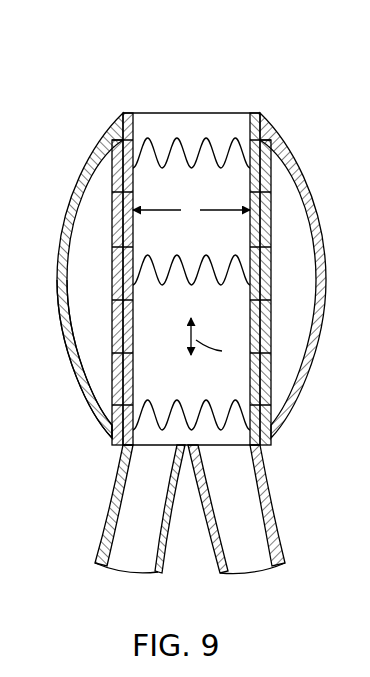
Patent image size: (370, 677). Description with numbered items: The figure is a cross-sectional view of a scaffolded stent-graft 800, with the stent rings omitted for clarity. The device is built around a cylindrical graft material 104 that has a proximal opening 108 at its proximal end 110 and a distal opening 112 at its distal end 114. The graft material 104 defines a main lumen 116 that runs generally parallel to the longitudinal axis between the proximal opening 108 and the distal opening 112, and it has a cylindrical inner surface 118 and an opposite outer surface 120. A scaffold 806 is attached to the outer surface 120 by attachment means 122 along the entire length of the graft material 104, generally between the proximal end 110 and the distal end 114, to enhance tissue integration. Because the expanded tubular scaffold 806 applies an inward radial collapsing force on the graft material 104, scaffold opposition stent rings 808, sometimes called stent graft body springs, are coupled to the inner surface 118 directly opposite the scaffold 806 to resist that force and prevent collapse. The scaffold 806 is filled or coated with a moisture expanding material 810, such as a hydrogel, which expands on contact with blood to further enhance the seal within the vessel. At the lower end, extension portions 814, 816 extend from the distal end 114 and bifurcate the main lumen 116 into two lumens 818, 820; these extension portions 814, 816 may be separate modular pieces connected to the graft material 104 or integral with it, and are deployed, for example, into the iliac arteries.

The scaffolded stent-graft 800 is at (175, 253).
The proximal opening 108 is at (191, 240).
The proximal end 110 is at (232, 113).
The scaffold 806 is at (103, 134).
The moisture expanding material 810 is at (87, 190).
The outer surface 120 is at (113, 349).
The distal end 114 is at (217, 438).
The inner surface 118 is at (135, 313).
The graft material 104 is at (250, 325).
The attachment means 122 is at (133, 133).
The lumen 116 is at (178, 385).
The scaffold opposition stent rings 808 is at (220, 167).
The distal opening 112 is at (178, 449).
The extension portion 814 is at (117, 497).
The extension portion 816 is at (272, 502).
The lumen 818 is at (157, 538).
The lumen 820 is at (257, 538).